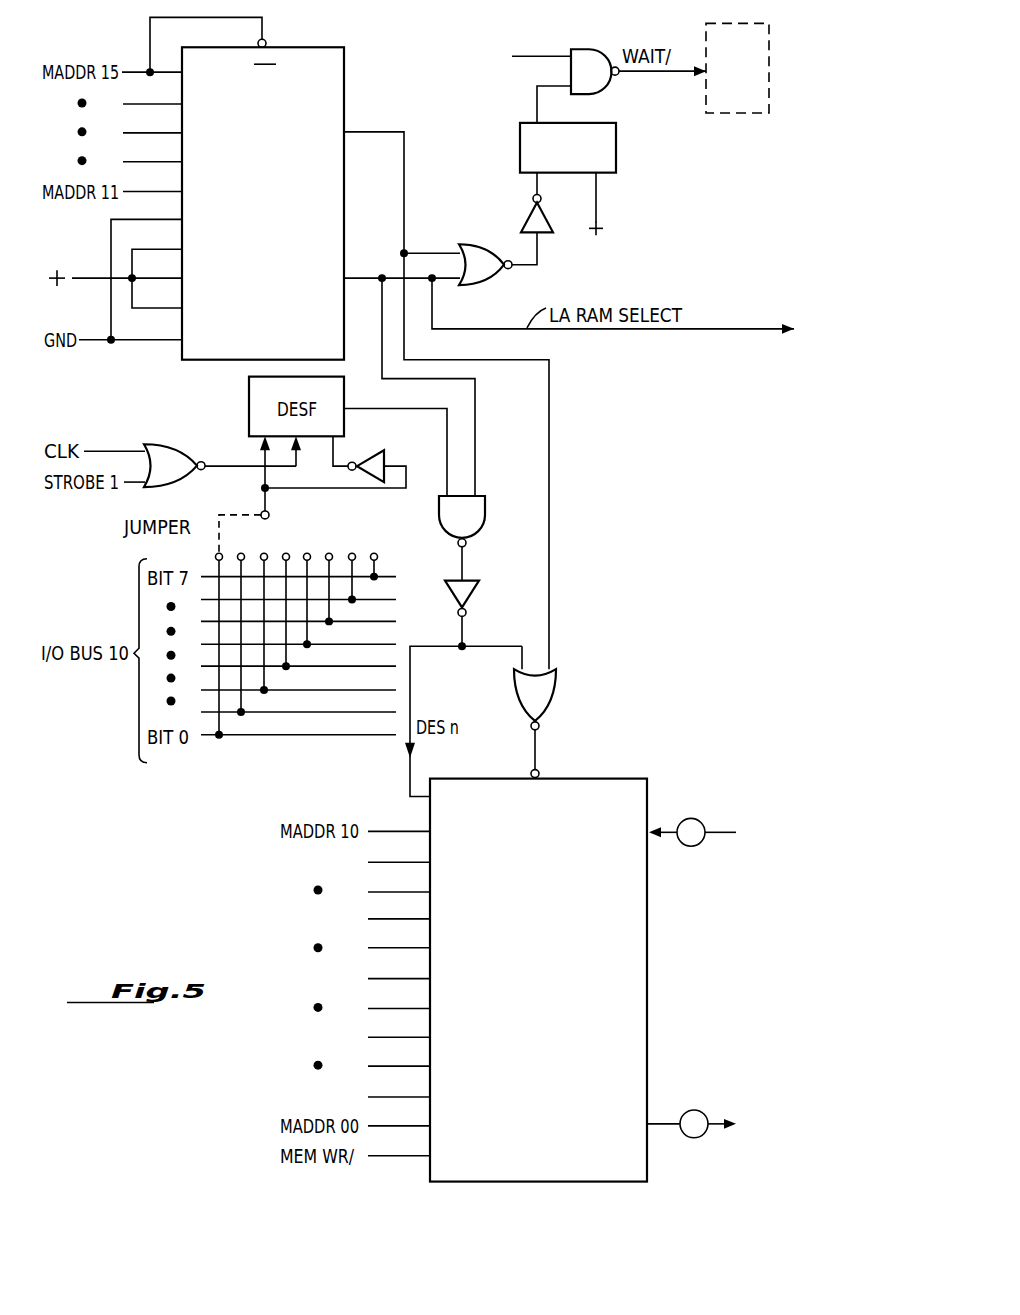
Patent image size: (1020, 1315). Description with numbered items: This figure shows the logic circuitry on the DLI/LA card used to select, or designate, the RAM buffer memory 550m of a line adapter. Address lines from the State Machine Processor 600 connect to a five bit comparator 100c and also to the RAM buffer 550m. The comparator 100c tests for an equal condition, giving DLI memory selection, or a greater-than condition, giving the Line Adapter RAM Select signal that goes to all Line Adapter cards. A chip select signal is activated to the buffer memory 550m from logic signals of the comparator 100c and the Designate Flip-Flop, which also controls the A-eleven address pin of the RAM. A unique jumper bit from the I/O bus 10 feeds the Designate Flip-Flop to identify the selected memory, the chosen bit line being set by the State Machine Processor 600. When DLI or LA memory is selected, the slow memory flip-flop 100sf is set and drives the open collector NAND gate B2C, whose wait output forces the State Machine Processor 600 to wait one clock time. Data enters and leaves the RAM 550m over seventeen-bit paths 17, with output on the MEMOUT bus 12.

The comparator 100c is at (347, 57).
The slow memory flip-flop 100sf is at (628, 162).
The State Machine Processor 600 is at (745, 106).
The open collector NAND gate B2C is at (587, 54).
The RAM buffer memory 550m is at (538, 980).
The I/O bus 10 is at (729, 813).
The MEMOUT bus 12 is at (673, 1126).
The 17-bit bus width 17 is at (722, 806).